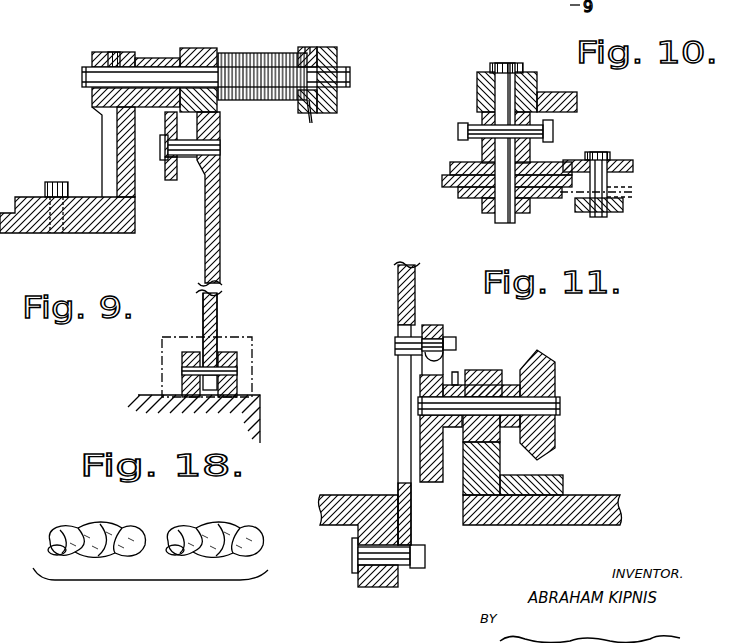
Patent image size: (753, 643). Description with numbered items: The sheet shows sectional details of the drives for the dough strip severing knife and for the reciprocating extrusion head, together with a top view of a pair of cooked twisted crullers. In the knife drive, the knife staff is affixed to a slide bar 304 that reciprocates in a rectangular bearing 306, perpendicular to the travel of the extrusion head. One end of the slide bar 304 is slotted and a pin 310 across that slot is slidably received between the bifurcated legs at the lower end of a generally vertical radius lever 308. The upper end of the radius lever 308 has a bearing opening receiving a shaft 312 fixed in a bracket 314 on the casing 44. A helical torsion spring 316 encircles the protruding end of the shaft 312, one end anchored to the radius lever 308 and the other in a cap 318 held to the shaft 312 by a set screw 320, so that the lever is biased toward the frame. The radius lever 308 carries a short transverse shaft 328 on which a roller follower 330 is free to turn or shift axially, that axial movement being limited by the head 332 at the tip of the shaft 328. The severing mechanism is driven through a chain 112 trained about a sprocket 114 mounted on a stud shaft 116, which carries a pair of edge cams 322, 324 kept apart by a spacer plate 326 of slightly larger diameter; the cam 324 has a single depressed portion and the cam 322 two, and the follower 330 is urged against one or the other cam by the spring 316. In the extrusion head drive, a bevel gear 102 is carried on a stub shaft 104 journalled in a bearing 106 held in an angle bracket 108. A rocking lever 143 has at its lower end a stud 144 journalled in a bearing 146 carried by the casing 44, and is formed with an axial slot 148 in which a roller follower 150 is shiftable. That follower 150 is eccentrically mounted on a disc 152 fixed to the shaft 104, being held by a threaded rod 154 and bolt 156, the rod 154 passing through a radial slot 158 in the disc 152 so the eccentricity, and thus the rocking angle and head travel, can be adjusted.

In FIG. 9, the shaft 312 is at (82, 71).
In FIG. 9, the bracket 314 is at (103, 148).
In FIG. 9, the helical torsion spring 316 is at (259, 54).
In FIG. 9, the cap 318 is at (337, 54).
In FIG. 9, the set screw 320 is at (316, 47).
In FIG. 9, the head 332 is at (160, 143).
In FIG. 9, the roller follower 330 is at (168, 181).
In FIG. 10, the roller follower 330 is at (627, 162).
In FIG. 9, the transverse shaft 328 is at (190, 158).
In FIG. 9, the radius lever 308 is at (221, 232).
In FIG. 10, the radius lever 308 is at (613, 213).
In FIG. 9, the rectangular bearing 306 is at (250, 345).
In FIG. 9, the pin 310 is at (237, 370).
In FIG. 9, the slide bar 304 is at (237, 388).
In FIG. 10, the chain 112 is at (463, 122).
In FIG. 10, the sprocket 114 is at (553, 130).
In FIG. 10, the edge cam 324 is at (463, 162).
In FIG. 10, the spacer plate 326 is at (443, 180).
In FIG. 10, the edge cam 322 is at (475, 193).
In FIG. 10, the stud shaft 116 is at (507, 223).
In FIG. 11, the rocking lever 143 is at (398, 292).
In FIG. 11, the disc 152 is at (434, 326).
In FIG. 11, the bolt 156 is at (449, 339).
In FIG. 11, the roller follower 150 is at (407, 346).
In FIG. 11, the threaded rod 154 is at (436, 353).
In FIG. 11, the radial slot 158 is at (433, 357).
In FIG. 11, the bearing 106 is at (487, 370).
In FIG. 11, the bevel gear 102 is at (545, 360).
In FIG. 11, the stub shaft 104 is at (560, 405).
In FIG. 11, the axial slot 148 is at (398, 422).
In FIG. 11, the angle bracket 108 is at (560, 483).
In FIG. 11, the hollow casing 44 is at (352, 495).
In FIG. 11, the bearing 146 is at (365, 588).
In FIG. 11, the stud 144 is at (387, 588).